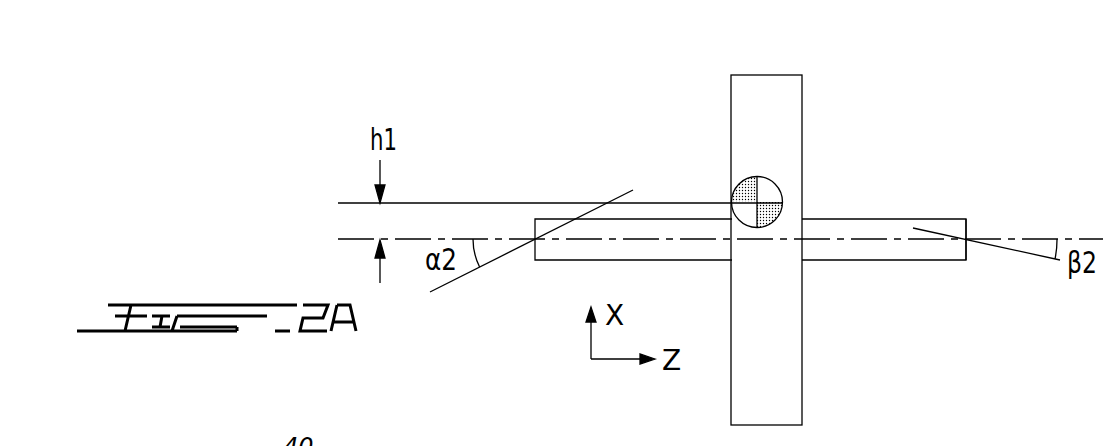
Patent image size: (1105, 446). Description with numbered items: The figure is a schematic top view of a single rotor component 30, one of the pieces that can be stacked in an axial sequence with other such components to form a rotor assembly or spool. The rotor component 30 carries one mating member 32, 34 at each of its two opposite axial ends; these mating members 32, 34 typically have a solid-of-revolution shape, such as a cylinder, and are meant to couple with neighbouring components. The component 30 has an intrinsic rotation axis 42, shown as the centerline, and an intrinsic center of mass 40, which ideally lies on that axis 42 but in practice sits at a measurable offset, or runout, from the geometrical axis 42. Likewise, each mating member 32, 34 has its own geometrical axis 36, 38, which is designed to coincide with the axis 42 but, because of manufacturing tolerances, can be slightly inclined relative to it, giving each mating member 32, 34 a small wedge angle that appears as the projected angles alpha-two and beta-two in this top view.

The rotor component 30 is at (840, 107).
The mating member 32 is at (548, 220).
The mating member 34 is at (955, 260).
The axis of mating member 36 is at (503, 253).
The axis of mating member 38 is at (1030, 253).
The intrinsic center of mass 40 is at (765, 190).
The intrinsic rotation axis 42 is at (1013, 238).